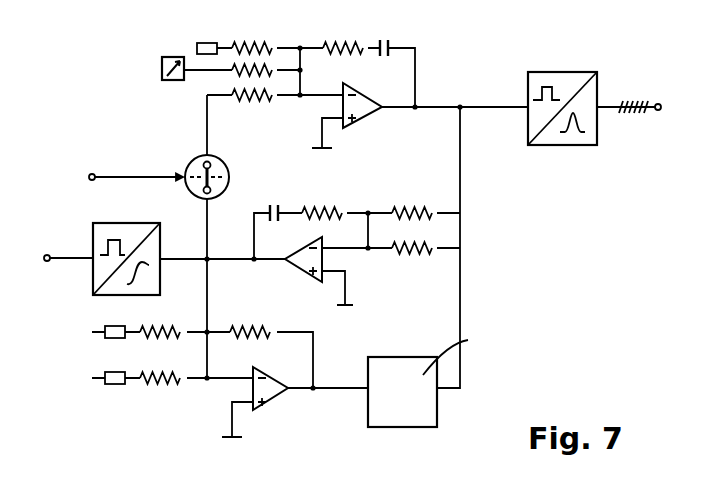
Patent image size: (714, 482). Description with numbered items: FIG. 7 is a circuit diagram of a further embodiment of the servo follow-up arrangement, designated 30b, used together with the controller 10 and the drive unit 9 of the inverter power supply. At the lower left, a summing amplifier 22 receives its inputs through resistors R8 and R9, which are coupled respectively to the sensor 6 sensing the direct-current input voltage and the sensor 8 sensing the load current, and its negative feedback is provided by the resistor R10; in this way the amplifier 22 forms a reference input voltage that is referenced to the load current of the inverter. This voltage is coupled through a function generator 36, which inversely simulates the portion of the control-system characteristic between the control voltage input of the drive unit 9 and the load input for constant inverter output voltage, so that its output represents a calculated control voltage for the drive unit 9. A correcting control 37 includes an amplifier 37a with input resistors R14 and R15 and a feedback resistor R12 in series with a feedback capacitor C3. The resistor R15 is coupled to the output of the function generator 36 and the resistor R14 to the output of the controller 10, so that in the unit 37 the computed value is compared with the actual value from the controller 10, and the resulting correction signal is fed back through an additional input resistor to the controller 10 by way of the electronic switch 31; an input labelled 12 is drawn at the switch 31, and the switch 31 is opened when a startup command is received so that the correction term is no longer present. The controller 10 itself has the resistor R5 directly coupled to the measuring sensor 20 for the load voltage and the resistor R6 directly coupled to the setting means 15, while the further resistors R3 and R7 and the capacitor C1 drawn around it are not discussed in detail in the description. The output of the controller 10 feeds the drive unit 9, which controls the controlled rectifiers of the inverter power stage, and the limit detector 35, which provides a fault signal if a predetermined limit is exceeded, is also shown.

The drive unit 9 is at (583, 74).
The controller 10 is at (398, 90).
The input signal 12 is at (64, 182).
The setting means 15 is at (162, 66).
The measuring sensor 20 is at (199, 45).
The summing amplifier 22 is at (272, 398).
The servo follow-up arrangement 30b is at (566, 267).
The electronic switch 31 is at (226, 162).
The limit detector 35 is at (133, 223).
The function generator 36 is at (437, 412).
The correcting control 37 is at (281, 252).
The amplifier 37a is at (299, 271).
The sensor 6 is at (103, 334).
The sensor 8 is at (103, 380).
The resistor R3 is at (248, 100).
The resistor R5 is at (236, 42).
The resistor R6 is at (278, 69).
The resistor R7 is at (329, 42).
The input resistor R8 is at (172, 325).
The input resistor R9 is at (167, 388).
The feedback resistor R10 is at (252, 325).
The feedback resistor R12 is at (306, 207).
The input resistor R14 is at (396, 207).
The input resistor R15 is at (428, 254).
The capacitor C1 is at (384, 39).
The feedback capacitor C3 is at (270, 205).